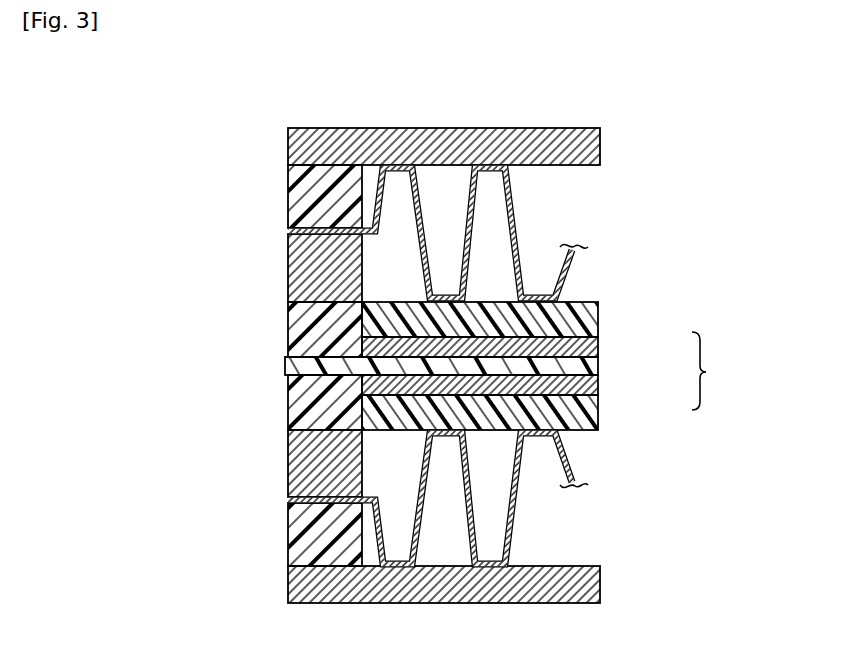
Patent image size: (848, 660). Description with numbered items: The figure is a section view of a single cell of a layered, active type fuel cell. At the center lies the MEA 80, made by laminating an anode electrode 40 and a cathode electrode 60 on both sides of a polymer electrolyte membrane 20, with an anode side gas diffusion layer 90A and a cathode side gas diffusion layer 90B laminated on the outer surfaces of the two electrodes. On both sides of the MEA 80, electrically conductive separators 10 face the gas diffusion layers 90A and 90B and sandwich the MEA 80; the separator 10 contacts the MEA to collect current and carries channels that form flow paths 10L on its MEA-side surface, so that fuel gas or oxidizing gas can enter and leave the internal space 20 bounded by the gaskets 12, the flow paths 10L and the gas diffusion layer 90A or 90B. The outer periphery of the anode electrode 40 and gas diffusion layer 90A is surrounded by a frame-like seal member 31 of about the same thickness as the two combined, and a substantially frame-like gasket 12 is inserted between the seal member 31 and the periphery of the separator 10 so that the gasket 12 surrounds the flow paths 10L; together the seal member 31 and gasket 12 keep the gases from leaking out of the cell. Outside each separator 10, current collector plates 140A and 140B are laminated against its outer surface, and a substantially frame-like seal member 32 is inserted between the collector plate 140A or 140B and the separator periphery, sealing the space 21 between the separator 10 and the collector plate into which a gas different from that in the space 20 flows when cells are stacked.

The separator 10 is at (296, 232).
The flow paths 10L is at (416, 184).
The gasket 12 is at (300, 275).
The polymer electrolyte membrane 20 is at (590, 365).
The space 21 is at (457, 224).
The seal member 31 is at (300, 330).
The seal member 32 is at (300, 200).
The anode electrode 40 is at (590, 347).
The cathode electrode 60 is at (590, 387).
The MEA 80 is at (715, 371).
The anode side gas diffusion layer 90A is at (590, 318).
The cathode side gas diffusion layer 90B is at (590, 410).
The current collector plate 140A is at (300, 142).
The current collector plate 140B is at (300, 584).